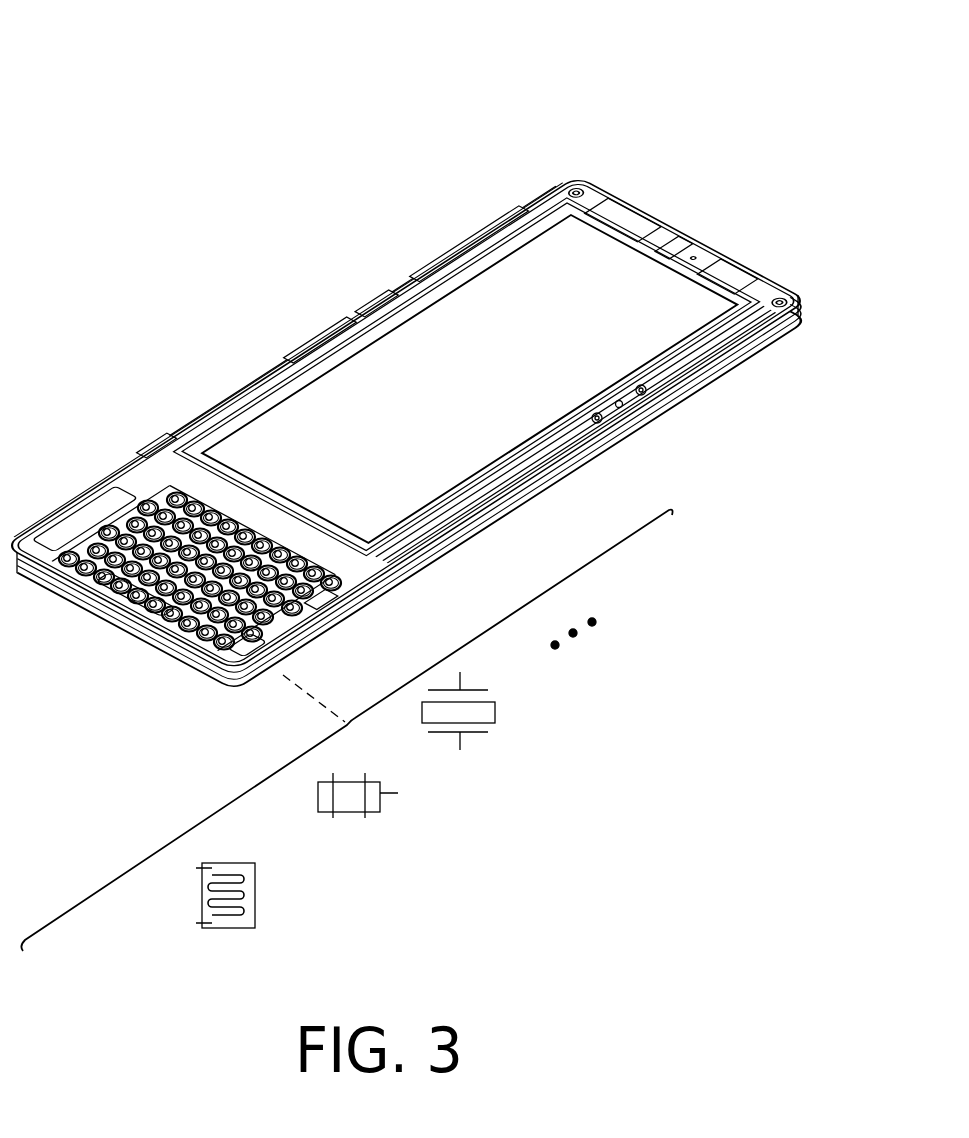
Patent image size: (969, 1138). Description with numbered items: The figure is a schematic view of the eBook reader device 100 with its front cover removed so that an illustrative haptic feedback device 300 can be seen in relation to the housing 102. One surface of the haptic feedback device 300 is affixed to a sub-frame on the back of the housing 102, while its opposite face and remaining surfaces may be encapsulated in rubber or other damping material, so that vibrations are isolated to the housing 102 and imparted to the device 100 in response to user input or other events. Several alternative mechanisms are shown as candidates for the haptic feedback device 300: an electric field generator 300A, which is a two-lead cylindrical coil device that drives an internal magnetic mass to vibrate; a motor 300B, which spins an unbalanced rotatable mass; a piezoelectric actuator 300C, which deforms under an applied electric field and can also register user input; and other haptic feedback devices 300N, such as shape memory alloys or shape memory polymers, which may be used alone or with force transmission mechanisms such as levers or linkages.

The eBook reader device 100 is at (137, 72).
The housing 102 is at (606, 449).
The haptic feedback device 300 is at (226, 641).
The electric field generator 300A is at (223, 911).
The motor 300B is at (347, 810).
The piezoelectric actuator 300C is at (533, 711).
The other haptic feedback devices 300N is at (672, 603).